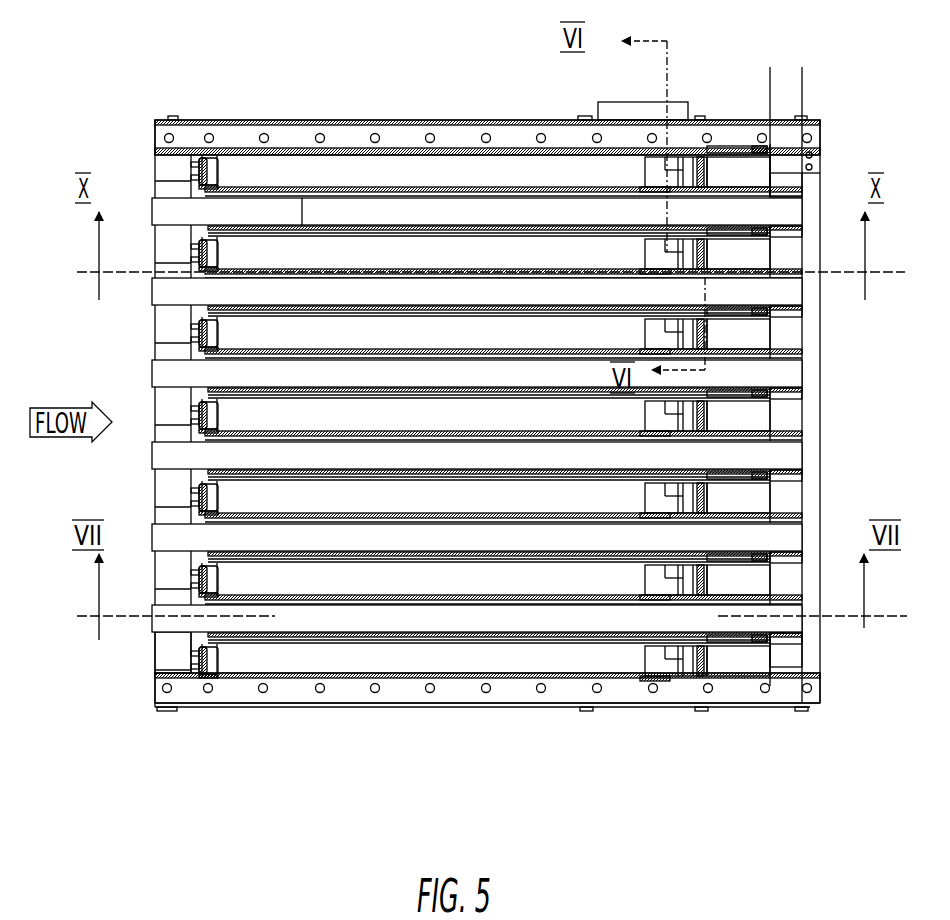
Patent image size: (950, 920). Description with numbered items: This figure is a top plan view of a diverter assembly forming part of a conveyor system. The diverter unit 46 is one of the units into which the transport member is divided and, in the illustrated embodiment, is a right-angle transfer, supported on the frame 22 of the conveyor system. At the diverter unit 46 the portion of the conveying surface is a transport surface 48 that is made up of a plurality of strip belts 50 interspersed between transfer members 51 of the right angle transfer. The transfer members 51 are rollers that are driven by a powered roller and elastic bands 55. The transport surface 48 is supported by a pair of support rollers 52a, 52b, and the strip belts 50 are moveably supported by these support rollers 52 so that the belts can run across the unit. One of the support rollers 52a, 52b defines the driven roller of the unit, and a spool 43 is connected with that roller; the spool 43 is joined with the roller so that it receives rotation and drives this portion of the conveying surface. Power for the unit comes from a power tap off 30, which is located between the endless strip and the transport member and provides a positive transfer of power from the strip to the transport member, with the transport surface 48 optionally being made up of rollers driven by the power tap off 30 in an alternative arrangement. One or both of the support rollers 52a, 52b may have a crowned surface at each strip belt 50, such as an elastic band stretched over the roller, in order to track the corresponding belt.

The diverter unit 46 is at (358, 75).
The frame 22 is at (385, 120).
The transfer members 51 is at (267, 243).
The support rollers 52 is at (443, 280).
The support roller 52a is at (798, 648).
The support roller 52b is at (153, 655).
The elastic bands 55 is at (690, 162).
The spool 43 is at (782, 150).
The power tap off 30 is at (808, 140).
The transport surface 48 is at (477, 415).
The strip belts 50 is at (590, 546).